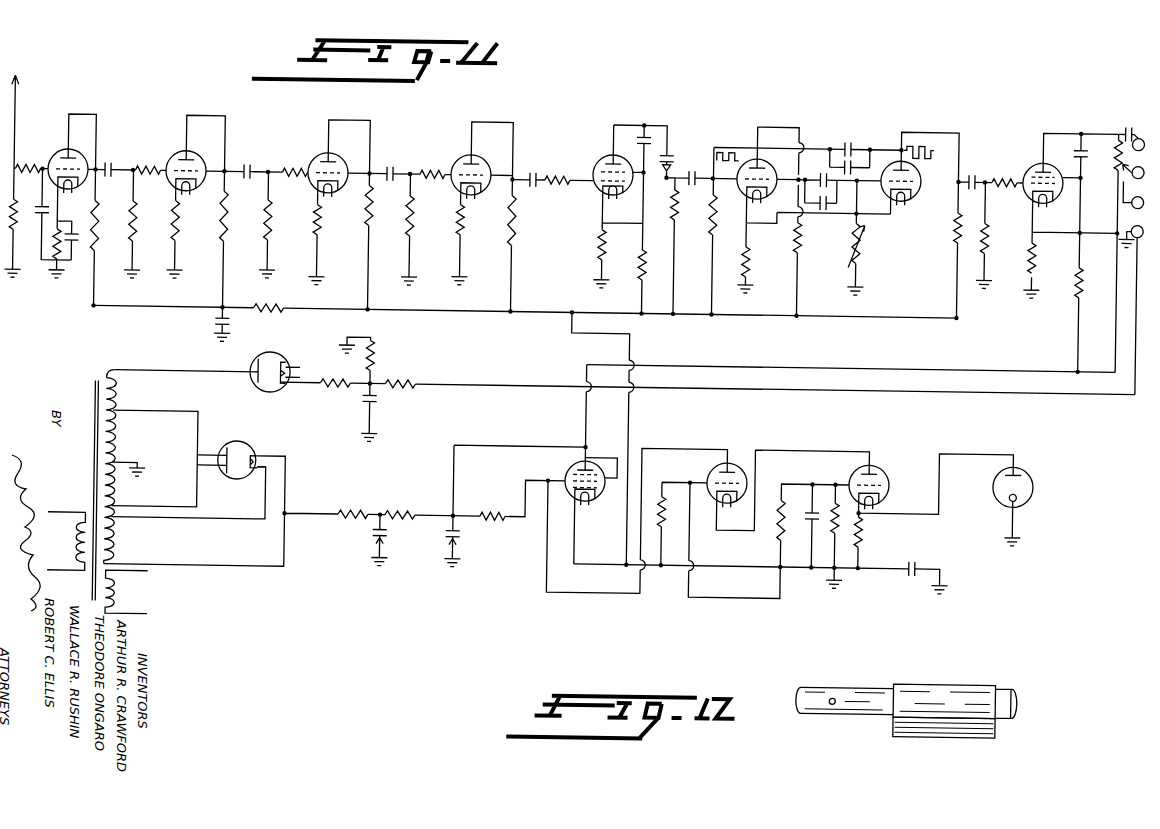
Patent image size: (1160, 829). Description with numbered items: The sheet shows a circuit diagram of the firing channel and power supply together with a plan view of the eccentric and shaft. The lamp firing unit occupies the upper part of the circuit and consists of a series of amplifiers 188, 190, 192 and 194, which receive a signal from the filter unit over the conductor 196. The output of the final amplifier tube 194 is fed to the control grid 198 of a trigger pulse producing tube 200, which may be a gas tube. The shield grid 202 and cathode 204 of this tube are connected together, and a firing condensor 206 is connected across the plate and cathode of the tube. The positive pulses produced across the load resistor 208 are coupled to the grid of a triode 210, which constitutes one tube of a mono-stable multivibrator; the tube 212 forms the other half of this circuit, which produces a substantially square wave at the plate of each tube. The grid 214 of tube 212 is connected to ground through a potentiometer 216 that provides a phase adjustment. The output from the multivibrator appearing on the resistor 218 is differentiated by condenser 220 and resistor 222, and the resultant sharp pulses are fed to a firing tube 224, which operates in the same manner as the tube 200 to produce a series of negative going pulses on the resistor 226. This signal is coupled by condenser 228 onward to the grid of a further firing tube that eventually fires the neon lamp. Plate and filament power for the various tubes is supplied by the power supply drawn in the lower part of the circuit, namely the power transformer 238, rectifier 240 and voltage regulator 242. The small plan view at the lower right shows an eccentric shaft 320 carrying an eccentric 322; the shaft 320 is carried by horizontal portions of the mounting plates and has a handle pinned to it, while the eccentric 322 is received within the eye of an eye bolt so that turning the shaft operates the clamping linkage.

In FIG. 11, the amplifier 188 is at (63, 146).
In FIG. 11, the amplifier 190 is at (190, 148).
In FIG. 11, the amplifier 192 is at (349, 138).
In FIG. 11, the final amplifier tube 194 is at (481, 148).
In FIG. 11, the conductor 196 is at (23, 97).
In FIG. 11, the control grid 198 is at (596, 181).
In FIG. 11, the trigger pulse producing tube 200 is at (612, 148).
In FIG. 11, the shield grid 202 is at (600, 172).
In FIG. 11, the cathode 204 is at (607, 192).
In FIG. 11, the firing condensor 206 is at (647, 129).
In FIG. 11, the load resistor 208 is at (679, 212).
In FIG. 11, the triode 210 is at (782, 156).
In FIG. 11, the tube 212 is at (915, 189).
In FIG. 11, the grid 214 is at (896, 148).
In FIG. 11, the potentiometer 216 is at (856, 254).
In FIG. 11, the resistor 218 is at (960, 230).
In FIG. 11, the condenser 220 is at (975, 160).
In FIG. 11, the resistor 222 is at (991, 218).
In FIG. 11, the firing tube 224 is at (1036, 151).
In FIG. 11, the resistor 226 is at (1120, 156).
In FIG. 11, the condenser 228 is at (1129, 112).
In FIG. 11, the power transformer 238 is at (124, 435).
In FIG. 11, the rectifier 240 is at (248, 439).
In FIG. 11, the voltage regulator 242 is at (725, 425).
In FIG. 12, the eccentric shaft 320 is at (865, 679).
In FIG. 12, the eccentric 322 is at (938, 714).